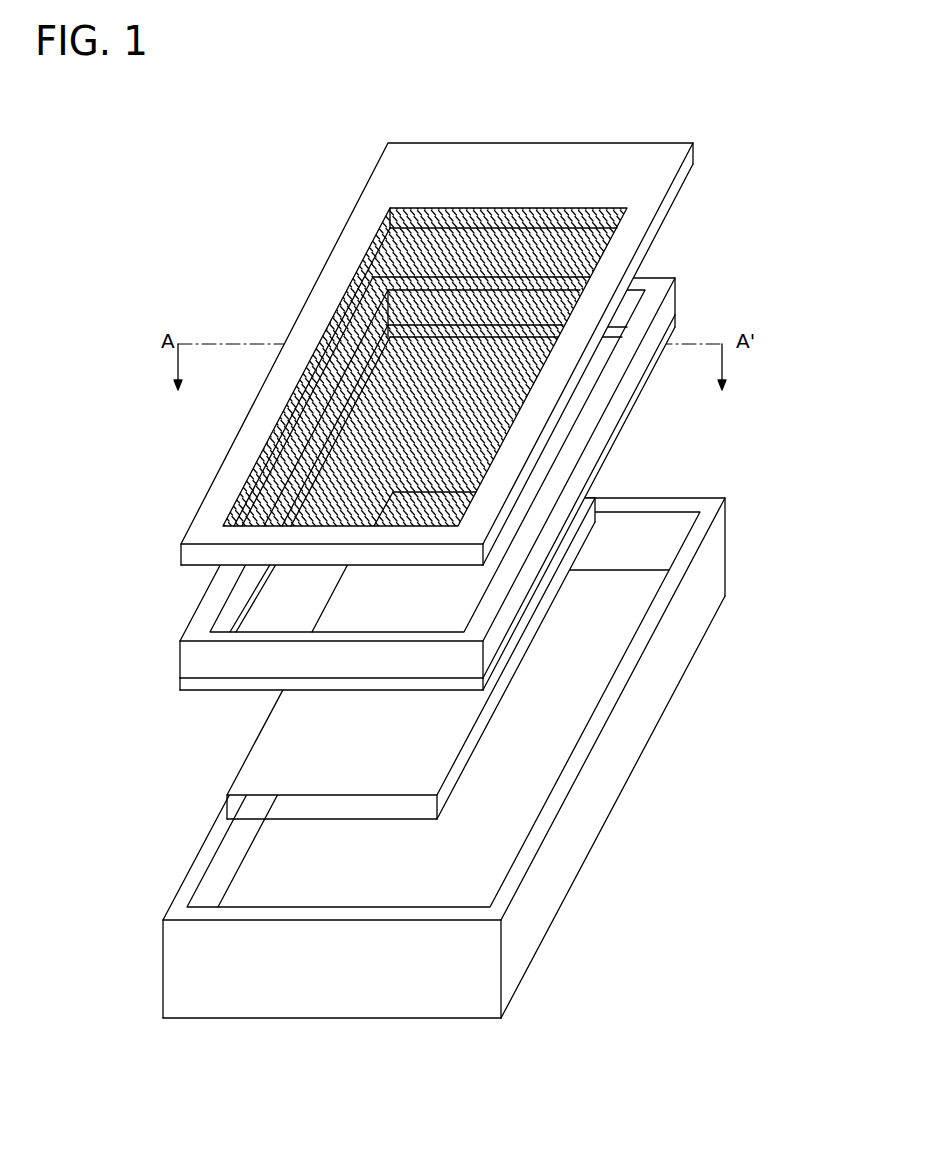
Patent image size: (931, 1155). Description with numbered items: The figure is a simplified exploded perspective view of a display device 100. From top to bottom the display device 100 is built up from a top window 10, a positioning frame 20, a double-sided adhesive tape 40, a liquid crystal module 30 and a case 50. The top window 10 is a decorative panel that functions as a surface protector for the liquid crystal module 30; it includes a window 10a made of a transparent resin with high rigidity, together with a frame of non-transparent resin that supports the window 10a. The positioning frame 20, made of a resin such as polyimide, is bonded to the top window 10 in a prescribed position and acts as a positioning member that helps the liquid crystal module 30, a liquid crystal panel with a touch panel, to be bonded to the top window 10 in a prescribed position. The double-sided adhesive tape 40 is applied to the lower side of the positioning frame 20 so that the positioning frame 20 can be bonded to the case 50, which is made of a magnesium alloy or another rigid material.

The display device 100 is at (822, 105).
The top window 10 is at (406, 354).
The window 10a is at (446, 391).
The positioning frame 20 is at (180, 645).
The liquid crystal module 30 is at (257, 727).
The double-sided adhesive tape 40 is at (179, 690).
The case 50 is at (163, 918).